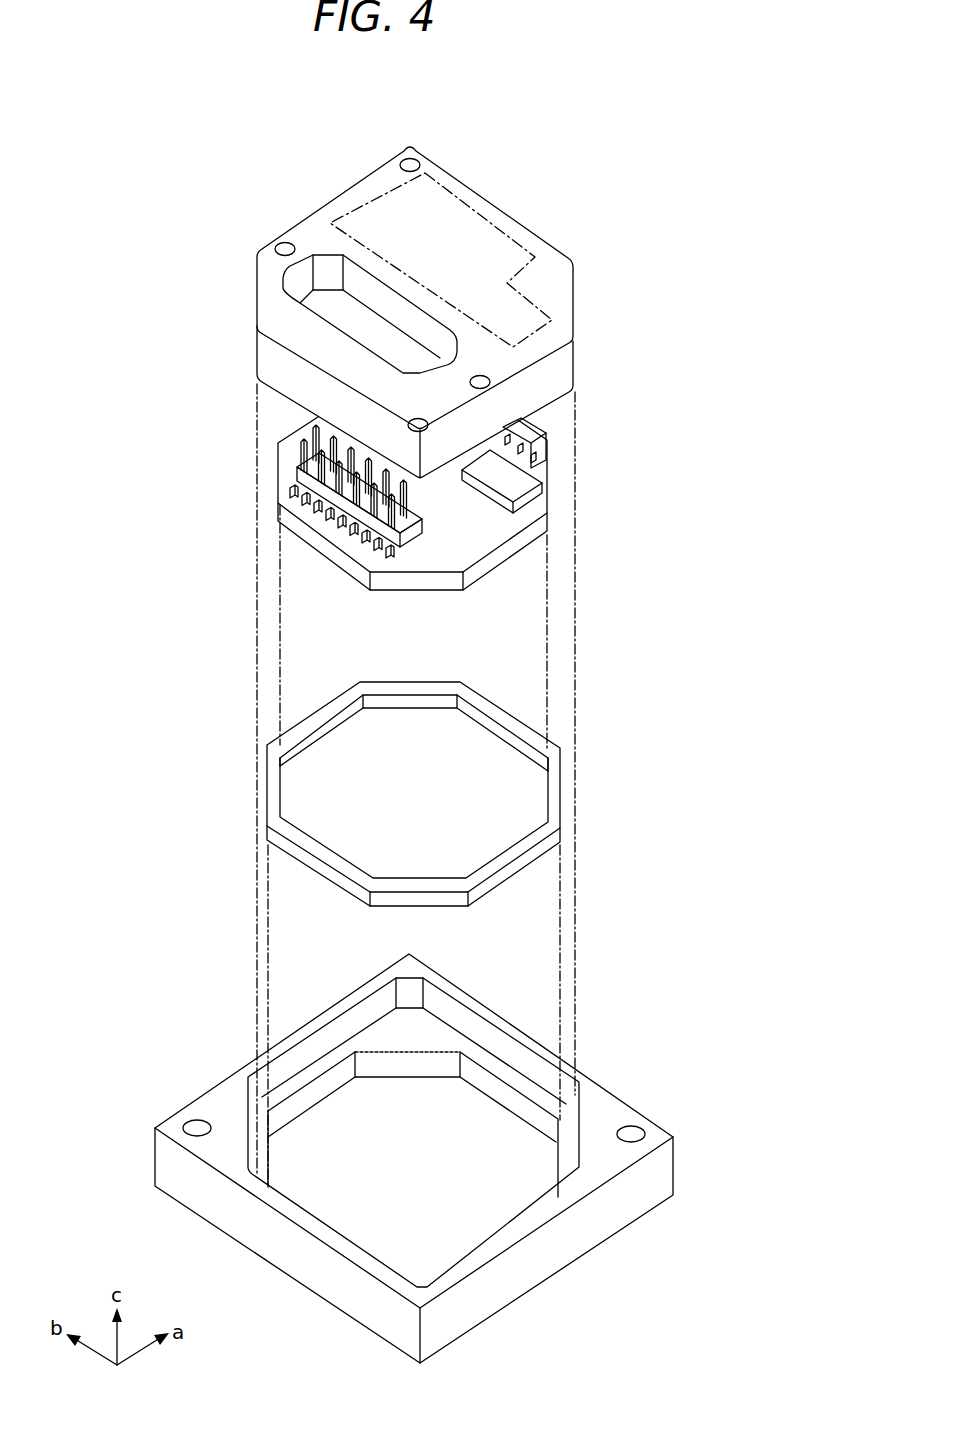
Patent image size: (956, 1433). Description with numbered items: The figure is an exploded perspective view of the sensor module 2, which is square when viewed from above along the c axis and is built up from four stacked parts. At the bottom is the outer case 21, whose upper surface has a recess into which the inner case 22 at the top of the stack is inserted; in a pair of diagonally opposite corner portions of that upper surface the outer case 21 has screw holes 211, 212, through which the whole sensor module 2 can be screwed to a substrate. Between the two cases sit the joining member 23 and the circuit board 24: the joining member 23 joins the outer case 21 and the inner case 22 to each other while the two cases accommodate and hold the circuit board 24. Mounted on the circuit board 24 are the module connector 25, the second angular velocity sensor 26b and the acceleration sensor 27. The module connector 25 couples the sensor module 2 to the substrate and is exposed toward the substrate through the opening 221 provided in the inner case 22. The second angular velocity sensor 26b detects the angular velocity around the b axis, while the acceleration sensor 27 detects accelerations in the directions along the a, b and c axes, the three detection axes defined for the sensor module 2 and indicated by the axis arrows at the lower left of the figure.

The sensor module 2 is at (565, 141).
The outer case 21 is at (562, 1237).
The screw hole 211 is at (640, 1130).
The screw hole 212 is at (194, 1120).
The inner case 22 is at (547, 290).
The opening 221 is at (398, 312).
The joining member 23 is at (555, 803).
The circuit board 24 is at (507, 553).
The module connector 25 is at (417, 533).
The second angular velocity sensor 26b is at (528, 432).
The acceleration sensor 27 is at (517, 490).